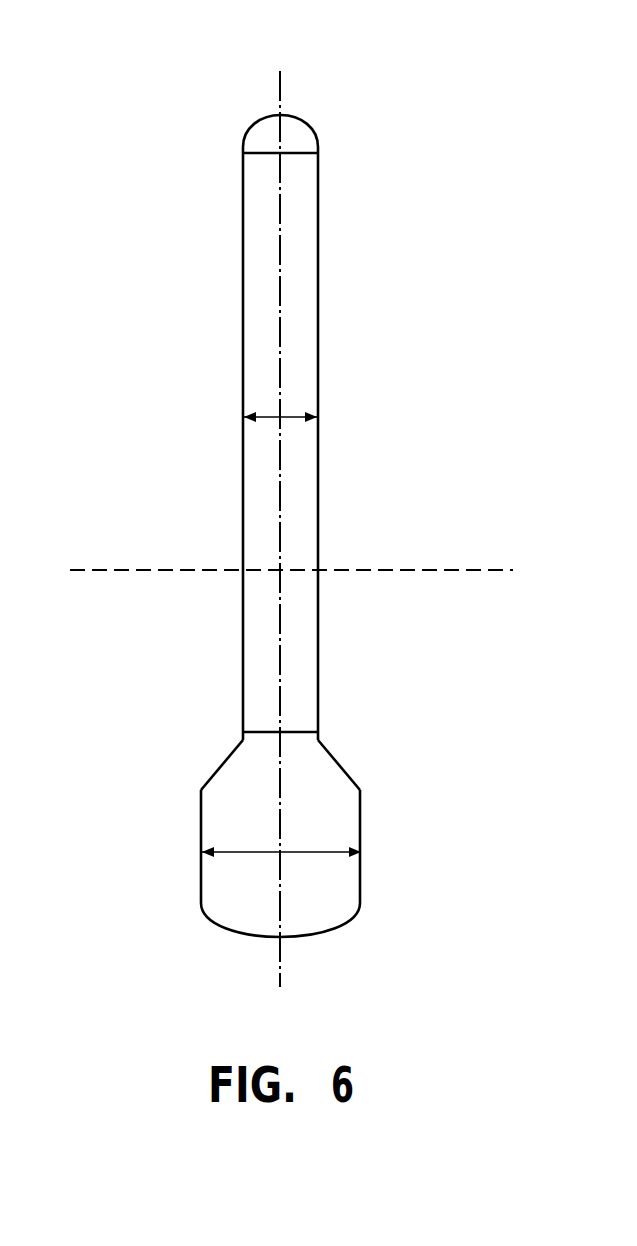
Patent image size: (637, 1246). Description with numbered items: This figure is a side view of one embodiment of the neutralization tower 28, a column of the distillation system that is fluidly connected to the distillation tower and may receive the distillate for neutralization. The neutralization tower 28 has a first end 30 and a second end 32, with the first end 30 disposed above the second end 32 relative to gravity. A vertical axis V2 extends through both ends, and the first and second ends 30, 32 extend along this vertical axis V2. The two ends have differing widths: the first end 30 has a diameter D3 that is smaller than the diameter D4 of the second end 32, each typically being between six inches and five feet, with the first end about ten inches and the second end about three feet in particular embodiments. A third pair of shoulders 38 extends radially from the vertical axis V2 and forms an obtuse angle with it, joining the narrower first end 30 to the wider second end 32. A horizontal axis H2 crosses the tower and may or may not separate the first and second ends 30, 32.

The neutralization tower 28 is at (254, 526).
The first end 30 is at (329, 733).
The second end 32 is at (335, 936).
The third pair of shoulders 38 is at (222, 765).
The vertical axis V2 is at (280, 78).
The horizontal axis H2 is at (456, 570).
The diameter of the first end D3 is at (268, 413).
The diameter of the second end D4 is at (240, 850).